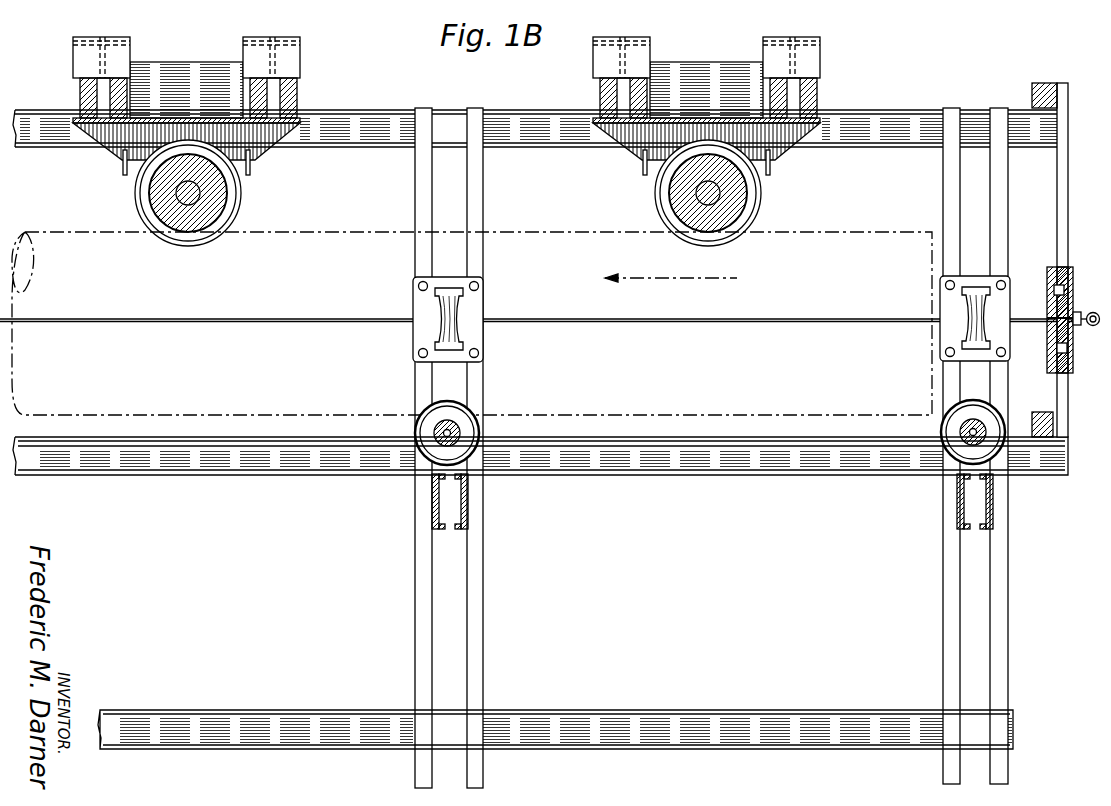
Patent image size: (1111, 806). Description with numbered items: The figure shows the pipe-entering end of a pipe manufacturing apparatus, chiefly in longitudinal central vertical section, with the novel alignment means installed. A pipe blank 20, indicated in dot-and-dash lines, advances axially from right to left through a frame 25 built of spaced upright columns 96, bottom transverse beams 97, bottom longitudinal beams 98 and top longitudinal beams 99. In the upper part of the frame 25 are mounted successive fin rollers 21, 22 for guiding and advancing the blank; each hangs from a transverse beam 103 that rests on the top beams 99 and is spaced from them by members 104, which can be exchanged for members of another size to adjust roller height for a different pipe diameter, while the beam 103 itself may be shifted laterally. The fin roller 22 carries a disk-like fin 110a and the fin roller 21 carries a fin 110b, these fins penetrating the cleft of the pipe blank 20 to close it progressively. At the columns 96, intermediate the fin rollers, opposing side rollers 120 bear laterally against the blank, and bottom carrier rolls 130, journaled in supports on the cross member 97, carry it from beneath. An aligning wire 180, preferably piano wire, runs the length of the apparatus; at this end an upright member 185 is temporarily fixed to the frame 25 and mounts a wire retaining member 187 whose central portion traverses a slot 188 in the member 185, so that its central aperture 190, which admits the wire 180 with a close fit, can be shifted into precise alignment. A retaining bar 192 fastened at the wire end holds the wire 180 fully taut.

The pipe blank 20 is at (363, 232).
The fin roller 21 is at (673, 193).
The fin roller 22 is at (150, 190).
The frame 25 is at (389, 103).
The upright columns 96 is at (483, 175).
The bottom transverse beams 97 is at (432, 512).
The bottom longitudinal beams 98 is at (295, 470).
The top longitudinal beams 99 is at (332, 118).
The transverse beam 103 is at (296, 44).
The spacing members 104 is at (78, 90).
The fin 110a is at (240, 197).
The fin 110b is at (764, 195).
The side roller 120 is at (463, 305).
The bottom carrier rolls 130 is at (945, 412).
The wire 180 is at (670, 322).
The upright member 185 is at (1060, 193).
The wire retaining member 187 is at (1047, 299).
The slot 188 is at (1054, 288).
The central aperture 190 is at (1048, 328).
The retaining bar 192 is at (1091, 326).